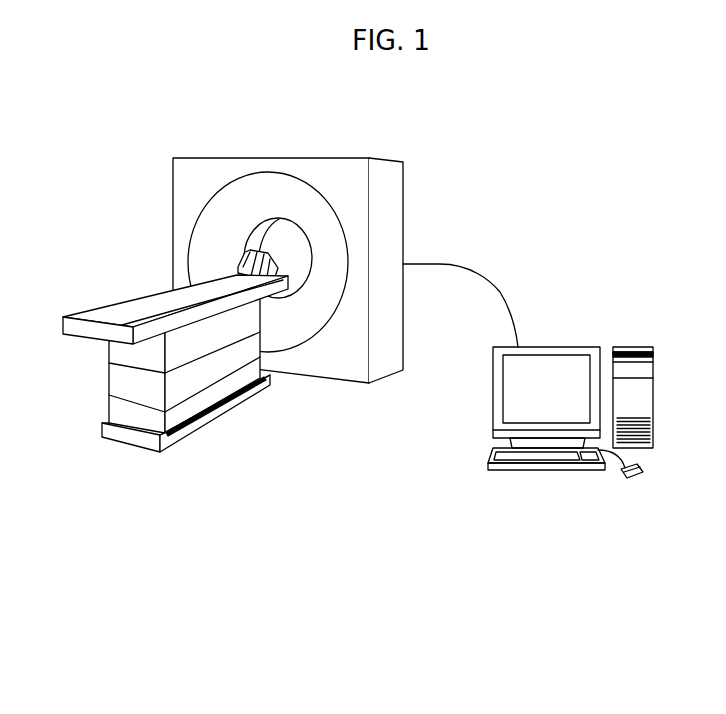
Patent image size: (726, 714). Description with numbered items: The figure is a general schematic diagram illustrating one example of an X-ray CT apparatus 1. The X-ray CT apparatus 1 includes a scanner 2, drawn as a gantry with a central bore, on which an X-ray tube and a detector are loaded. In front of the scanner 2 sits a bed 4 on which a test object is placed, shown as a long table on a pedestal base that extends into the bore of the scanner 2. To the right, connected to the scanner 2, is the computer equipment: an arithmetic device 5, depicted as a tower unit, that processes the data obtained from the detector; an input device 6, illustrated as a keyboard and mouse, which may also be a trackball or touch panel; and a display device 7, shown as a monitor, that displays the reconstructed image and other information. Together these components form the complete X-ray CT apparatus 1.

The X-ray CT apparatus 1 is at (392, 319).
The scanner 2 is at (258, 158).
The bed 4 is at (266, 381).
The arithmetic device 5 is at (650, 328).
The input device 6 is at (545, 470).
The display device 7 is at (545, 347).